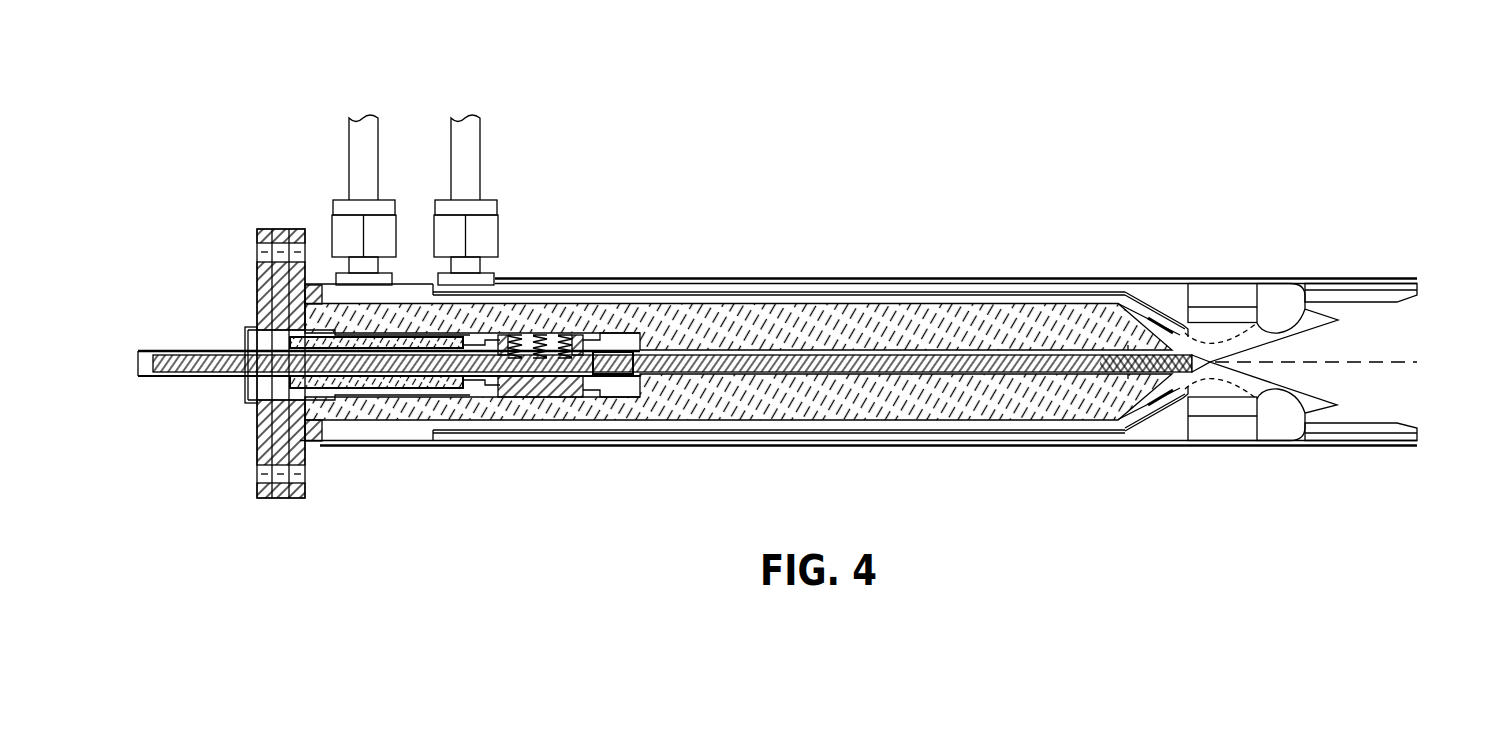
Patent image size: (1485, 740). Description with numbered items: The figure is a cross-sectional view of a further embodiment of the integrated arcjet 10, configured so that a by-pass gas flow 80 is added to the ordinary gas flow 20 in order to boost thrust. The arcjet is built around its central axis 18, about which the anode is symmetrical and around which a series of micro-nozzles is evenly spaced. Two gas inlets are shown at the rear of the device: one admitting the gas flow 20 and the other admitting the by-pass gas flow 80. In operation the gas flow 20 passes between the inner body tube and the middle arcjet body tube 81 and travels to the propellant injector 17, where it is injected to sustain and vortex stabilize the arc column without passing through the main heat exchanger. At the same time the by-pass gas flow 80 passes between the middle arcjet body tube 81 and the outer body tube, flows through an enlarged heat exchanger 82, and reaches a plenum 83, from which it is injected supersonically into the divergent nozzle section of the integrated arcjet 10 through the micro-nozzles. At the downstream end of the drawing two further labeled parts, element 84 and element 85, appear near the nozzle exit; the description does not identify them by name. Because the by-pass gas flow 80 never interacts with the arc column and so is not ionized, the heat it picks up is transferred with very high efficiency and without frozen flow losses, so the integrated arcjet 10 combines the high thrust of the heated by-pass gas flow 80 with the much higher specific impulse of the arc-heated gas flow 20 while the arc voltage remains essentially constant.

The integrated arcjet 10 is at (732, 445).
The propellant injector 17 is at (1175, 383).
The central axis 18 is at (1372, 363).
The gas flow 20 is at (367, 152).
The by-pass gas flow 80 is at (467, 152).
The middle arcjet body tube 81 is at (590, 290).
The enlarged heat exchanger 82 is at (1220, 298).
The plenum 83 is at (1277, 302).
The lower shield end piece 84 is at (1333, 405).
The upper shield end piece 85 is at (1383, 300).